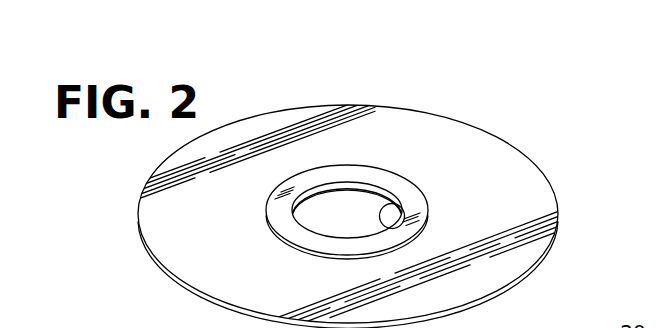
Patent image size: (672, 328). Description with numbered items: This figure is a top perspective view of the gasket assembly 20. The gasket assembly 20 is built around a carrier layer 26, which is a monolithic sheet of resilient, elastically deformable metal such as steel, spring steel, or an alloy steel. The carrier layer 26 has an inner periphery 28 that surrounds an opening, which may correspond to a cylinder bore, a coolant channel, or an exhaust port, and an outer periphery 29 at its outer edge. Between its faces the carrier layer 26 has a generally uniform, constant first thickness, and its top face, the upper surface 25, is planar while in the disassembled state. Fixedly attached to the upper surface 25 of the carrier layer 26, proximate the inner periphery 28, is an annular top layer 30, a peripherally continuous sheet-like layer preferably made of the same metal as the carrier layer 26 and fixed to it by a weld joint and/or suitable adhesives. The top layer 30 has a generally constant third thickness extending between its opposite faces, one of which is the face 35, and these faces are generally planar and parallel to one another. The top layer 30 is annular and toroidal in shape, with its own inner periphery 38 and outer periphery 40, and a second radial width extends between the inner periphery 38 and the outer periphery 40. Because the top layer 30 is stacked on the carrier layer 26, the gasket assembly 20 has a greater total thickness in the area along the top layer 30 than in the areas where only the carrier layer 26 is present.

The gasket assembly 20 is at (594, 72).
The upper surface 25 is at (500, 191).
The carrier layer 26 is at (412, 127).
The inner periphery 28 is at (325, 194).
The outer periphery 29 is at (561, 209).
The annular top layer 30 is at (406, 191).
The upper face of top layer 35 is at (296, 191).
The inner periphery of top layer 38 is at (404, 246).
The outer periphery of top layer 40 is at (400, 203).